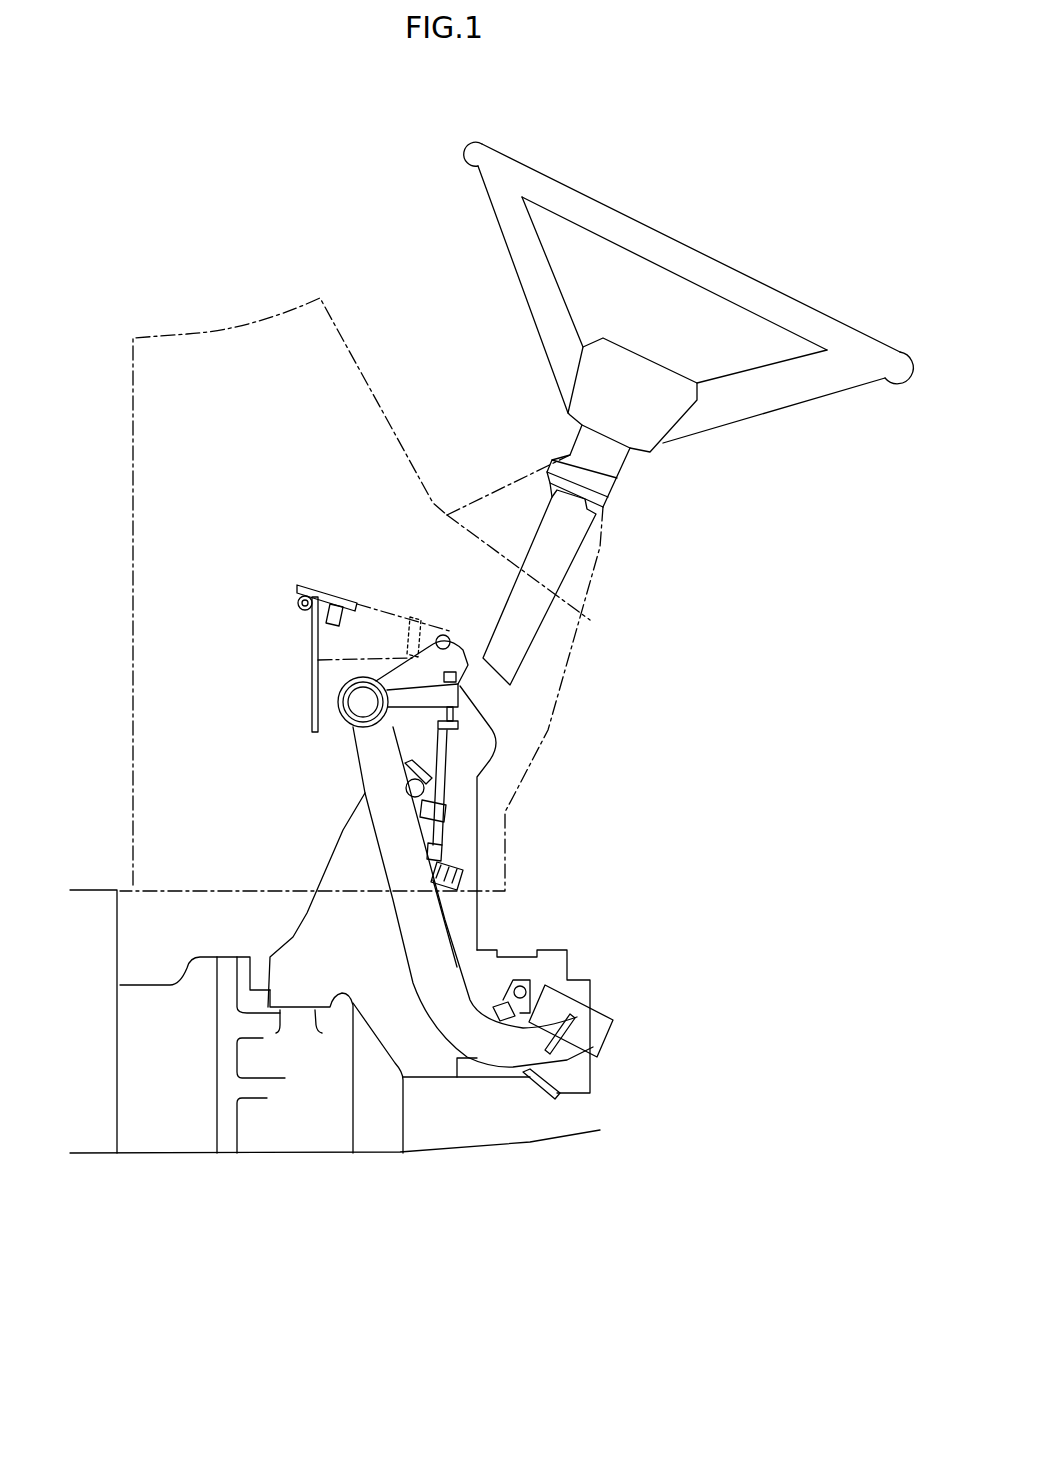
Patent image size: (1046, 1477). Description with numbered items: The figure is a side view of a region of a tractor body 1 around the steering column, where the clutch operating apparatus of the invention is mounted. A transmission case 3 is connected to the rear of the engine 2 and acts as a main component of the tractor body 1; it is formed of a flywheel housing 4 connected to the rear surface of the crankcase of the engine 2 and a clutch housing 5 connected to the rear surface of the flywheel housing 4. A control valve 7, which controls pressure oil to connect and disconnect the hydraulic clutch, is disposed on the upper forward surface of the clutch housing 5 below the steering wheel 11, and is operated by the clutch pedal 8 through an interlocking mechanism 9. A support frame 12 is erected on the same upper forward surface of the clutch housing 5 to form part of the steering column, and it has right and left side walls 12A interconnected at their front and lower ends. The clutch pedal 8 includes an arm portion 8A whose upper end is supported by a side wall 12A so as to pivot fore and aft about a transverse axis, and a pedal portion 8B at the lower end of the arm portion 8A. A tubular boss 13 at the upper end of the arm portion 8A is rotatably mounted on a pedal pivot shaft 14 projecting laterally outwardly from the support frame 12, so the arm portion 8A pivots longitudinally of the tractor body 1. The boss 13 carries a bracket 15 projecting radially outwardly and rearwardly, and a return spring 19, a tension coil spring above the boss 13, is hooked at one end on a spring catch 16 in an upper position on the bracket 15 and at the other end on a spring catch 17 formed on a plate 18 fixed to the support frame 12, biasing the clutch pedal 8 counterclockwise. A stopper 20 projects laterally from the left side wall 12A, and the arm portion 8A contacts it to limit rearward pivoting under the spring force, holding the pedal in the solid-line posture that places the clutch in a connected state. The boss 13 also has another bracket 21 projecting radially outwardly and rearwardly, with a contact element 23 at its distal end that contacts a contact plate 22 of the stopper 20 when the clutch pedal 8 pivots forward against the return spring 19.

The tractor body 1 is at (373, 1168).
The engine 2 is at (100, 930).
The transmission case 3 is at (240, 1167).
The flywheel housing 4 is at (197, 982).
The clutch housing 5 is at (302, 1152).
The control valve 7 is at (523, 952).
The clutch pedal 8 is at (552, 1129).
The arm portion 8A is at (495, 1057).
The pedal portion 8B is at (612, 1033).
The interlocking mechanism 9 is at (467, 808).
The steering wheel 11 is at (579, 203).
The support frame 12 is at (342, 828).
The side walls 12A is at (323, 915).
The tubular boss 13 is at (343, 683).
The pedal pivot shaft 14 is at (357, 700).
The bracket 15 is at (377, 677).
The spring catch 16 is at (449, 636).
The spring catch 17 is at (300, 583).
The plate 18 is at (298, 602).
The return spring 19 is at (418, 617).
The stopper 20 is at (447, 823).
The bracket 21 is at (440, 696).
The contact plate 22 is at (440, 752).
The contact element 23 is at (458, 725).